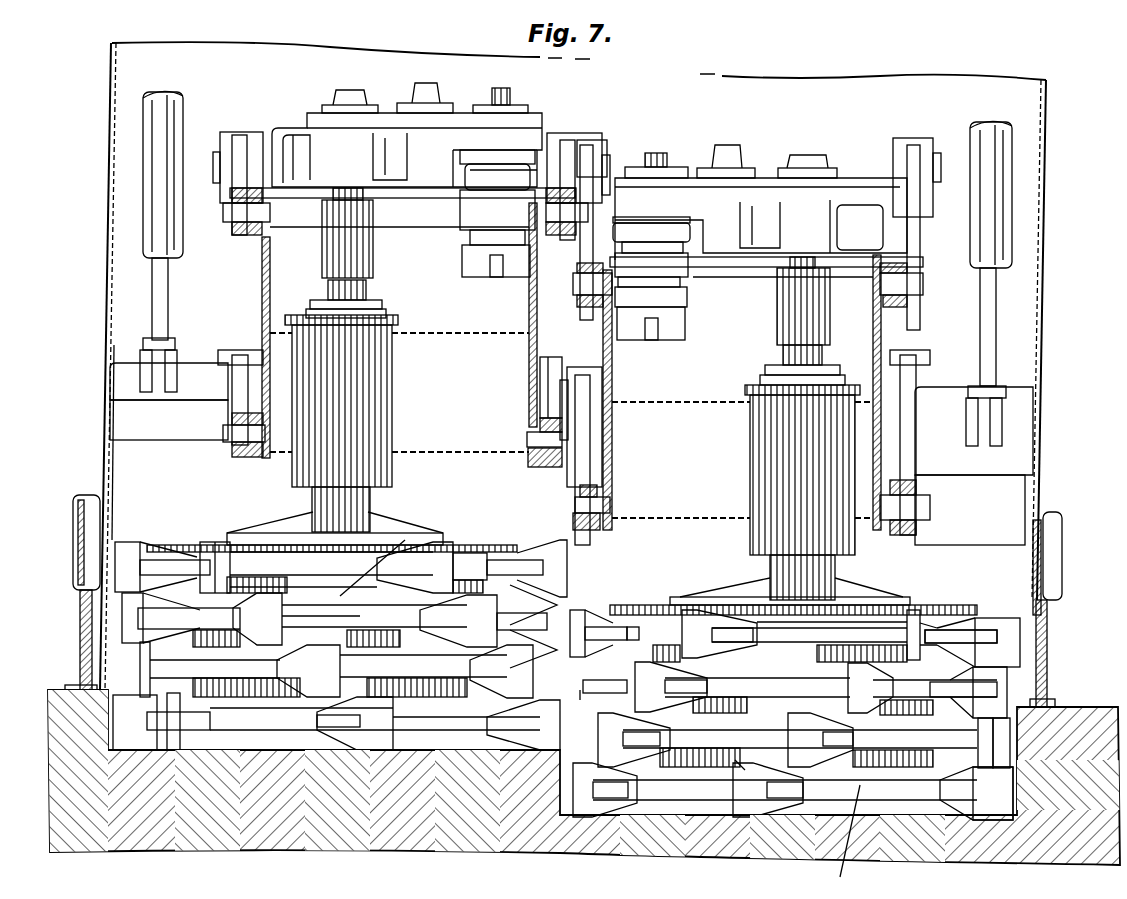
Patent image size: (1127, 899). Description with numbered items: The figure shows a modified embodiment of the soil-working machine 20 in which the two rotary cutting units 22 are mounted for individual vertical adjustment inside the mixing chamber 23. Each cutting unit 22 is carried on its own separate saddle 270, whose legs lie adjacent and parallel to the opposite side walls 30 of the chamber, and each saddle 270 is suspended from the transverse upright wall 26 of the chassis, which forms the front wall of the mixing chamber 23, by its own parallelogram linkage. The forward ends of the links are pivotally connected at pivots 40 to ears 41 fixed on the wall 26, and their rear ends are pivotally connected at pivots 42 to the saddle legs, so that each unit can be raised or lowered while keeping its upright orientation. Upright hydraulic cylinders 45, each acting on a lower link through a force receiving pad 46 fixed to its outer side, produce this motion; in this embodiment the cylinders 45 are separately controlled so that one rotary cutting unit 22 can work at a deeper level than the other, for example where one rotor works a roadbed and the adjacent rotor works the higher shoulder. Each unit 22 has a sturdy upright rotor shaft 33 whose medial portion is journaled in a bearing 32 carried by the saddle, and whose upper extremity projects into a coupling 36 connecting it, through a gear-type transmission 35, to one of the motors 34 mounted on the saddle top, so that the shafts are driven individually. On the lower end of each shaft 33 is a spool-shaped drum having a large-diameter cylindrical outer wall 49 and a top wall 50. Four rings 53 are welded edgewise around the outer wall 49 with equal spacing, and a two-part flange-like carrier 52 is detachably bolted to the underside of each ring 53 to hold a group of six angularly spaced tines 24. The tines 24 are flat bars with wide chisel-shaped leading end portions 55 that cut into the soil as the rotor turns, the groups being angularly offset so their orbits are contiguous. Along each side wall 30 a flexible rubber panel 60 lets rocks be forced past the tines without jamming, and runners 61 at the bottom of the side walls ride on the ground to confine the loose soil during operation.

The frame structure 20 is at (132, 528).
The rotary cutting units 22 is at (190, 548).
The mixing chamber 23 is at (130, 485).
The tines 24 is at (145, 560).
The upright wall 26 is at (836, 100).
The side walls 30 is at (104, 318).
The bearings 32 is at (386, 398).
The rotor shafts 33 is at (360, 510).
The motors 34 is at (490, 265).
The gear-type transmissions 35 is at (388, 114).
The couplings 36 is at (358, 252).
The pivotal connections 40 is at (215, 165).
The ears 41 is at (236, 135).
The pivotal connections 42 is at (226, 440).
The hydraulic cylinders 45 is at (158, 168).
The force receiving pad 46 is at (125, 380).
The cylindrical outer wall 49 is at (395, 540).
The top wall 50 is at (262, 540).
The carrier 52 is at (540, 572).
The ring 53 is at (468, 560).
The leading end portion 55 is at (640, 700).
The panel 60 is at (84, 633).
The runners 61 is at (70, 690).
The saddles 270 is at (262, 272).